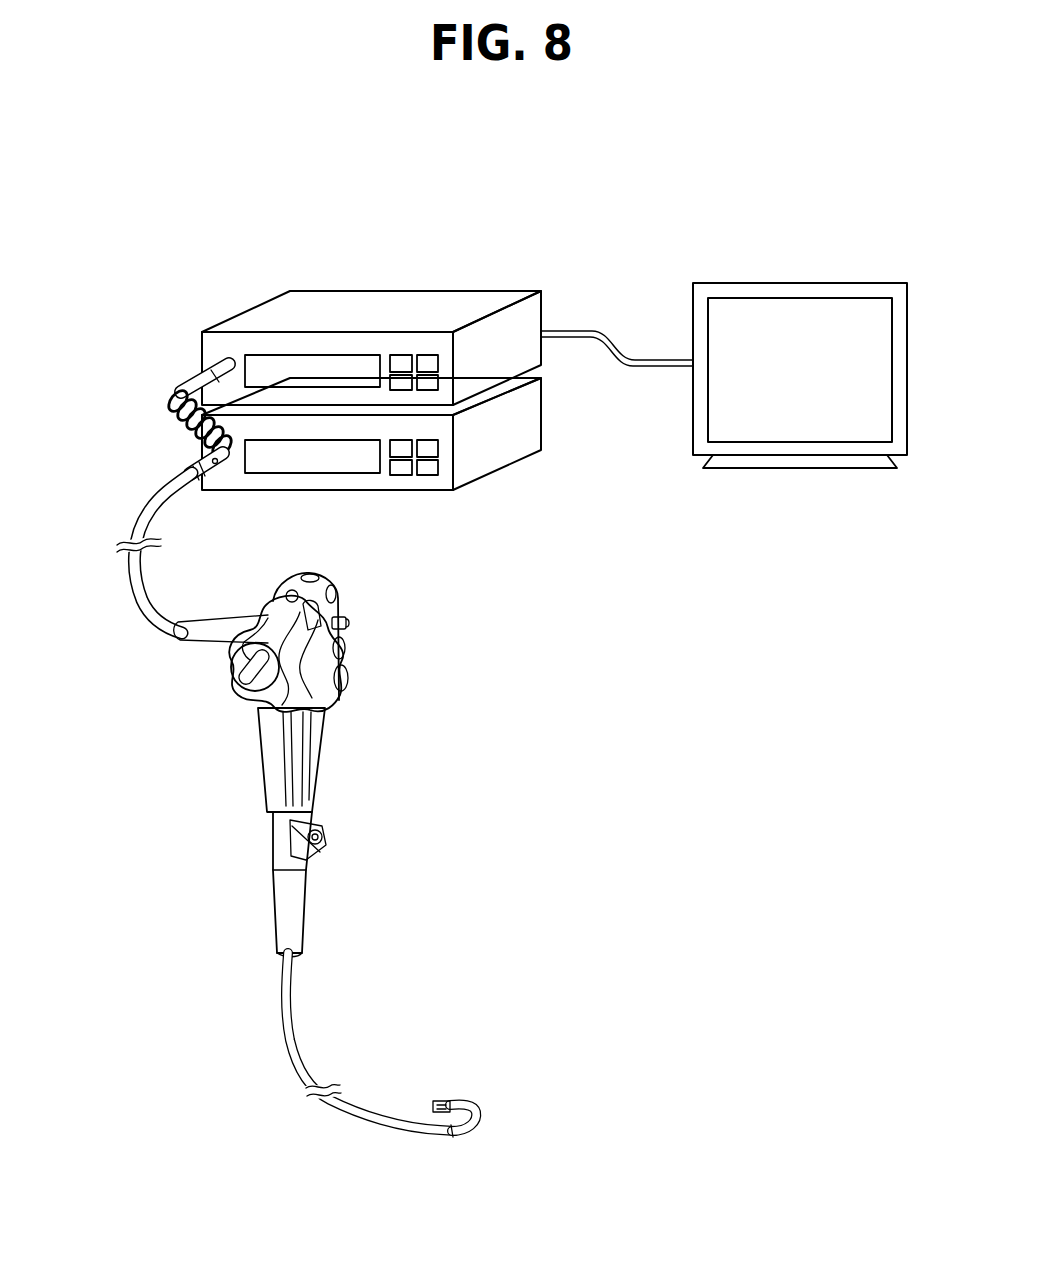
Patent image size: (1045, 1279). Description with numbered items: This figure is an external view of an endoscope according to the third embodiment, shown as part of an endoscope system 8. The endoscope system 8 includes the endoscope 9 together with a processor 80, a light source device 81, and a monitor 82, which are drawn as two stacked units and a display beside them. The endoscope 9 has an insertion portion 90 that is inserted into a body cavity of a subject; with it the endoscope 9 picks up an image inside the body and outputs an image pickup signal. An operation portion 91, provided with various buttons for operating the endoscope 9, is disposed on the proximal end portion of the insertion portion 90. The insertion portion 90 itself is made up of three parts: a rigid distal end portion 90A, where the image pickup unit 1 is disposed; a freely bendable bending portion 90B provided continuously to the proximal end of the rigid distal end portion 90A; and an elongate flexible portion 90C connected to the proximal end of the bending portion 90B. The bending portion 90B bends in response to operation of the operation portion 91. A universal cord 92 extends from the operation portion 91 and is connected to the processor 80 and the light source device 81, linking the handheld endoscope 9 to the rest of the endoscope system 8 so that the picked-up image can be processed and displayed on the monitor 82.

The endoscope system 8 is at (741, 146).
The processor 80 is at (510, 292).
The light source device 81 is at (543, 413).
The monitor 82 is at (803, 283).
The endoscope 9 is at (444, 711).
The universal cord 92 is at (129, 580).
The operation portion 91 is at (342, 667).
The insertion portion 90 is at (295, 1000).
The rigid distal end portion 90A is at (433, 1103).
The bending portion 90B is at (480, 1122).
The flexible portion 90C is at (337, 1113).
The image pickup unit 1 is at (437, 1103).